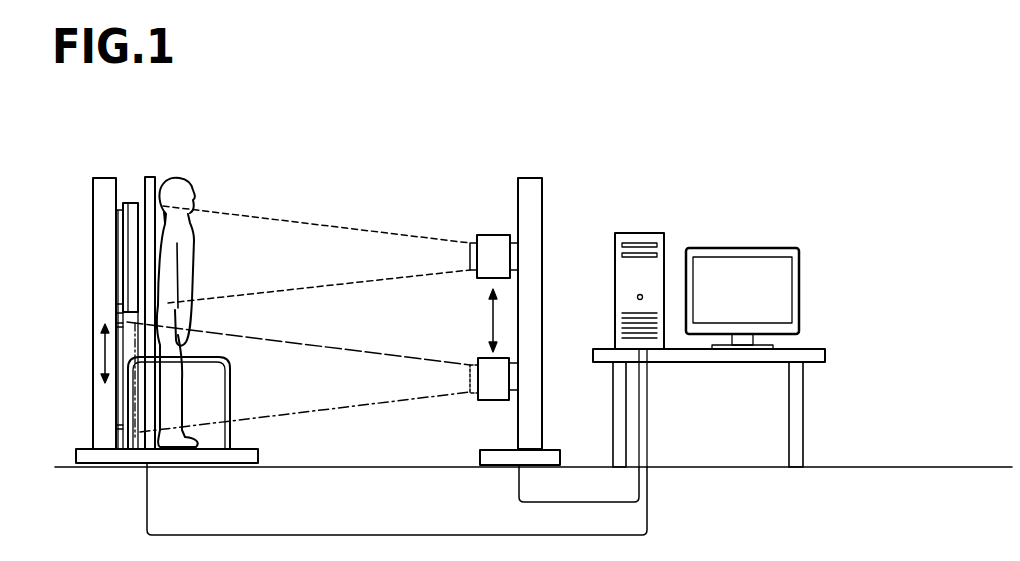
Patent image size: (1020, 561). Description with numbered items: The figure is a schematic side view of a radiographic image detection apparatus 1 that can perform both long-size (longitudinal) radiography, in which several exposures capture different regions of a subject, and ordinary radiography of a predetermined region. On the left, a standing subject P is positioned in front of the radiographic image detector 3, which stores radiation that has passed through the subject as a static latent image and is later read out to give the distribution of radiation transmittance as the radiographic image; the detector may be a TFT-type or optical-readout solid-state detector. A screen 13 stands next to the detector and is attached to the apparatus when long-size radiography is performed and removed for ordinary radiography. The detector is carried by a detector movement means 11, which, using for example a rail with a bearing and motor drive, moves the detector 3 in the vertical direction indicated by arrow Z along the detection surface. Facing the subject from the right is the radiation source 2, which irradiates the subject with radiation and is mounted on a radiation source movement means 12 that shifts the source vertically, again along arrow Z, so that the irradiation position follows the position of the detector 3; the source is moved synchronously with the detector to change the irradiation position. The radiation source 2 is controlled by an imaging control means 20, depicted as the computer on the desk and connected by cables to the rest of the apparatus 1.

The radiographic image detection apparatus 1 is at (367, 119).
The radiation source 2 is at (494, 226).
The radiographic image detector 3 is at (129, 202).
The detector movement means 11 is at (103, 179).
The radiation source movement means 12 is at (532, 193).
The screen 13 is at (150, 177).
The imaging control means 20 is at (636, 232).
The subject person P is at (177, 179).
The arrow Z is at (101, 353).